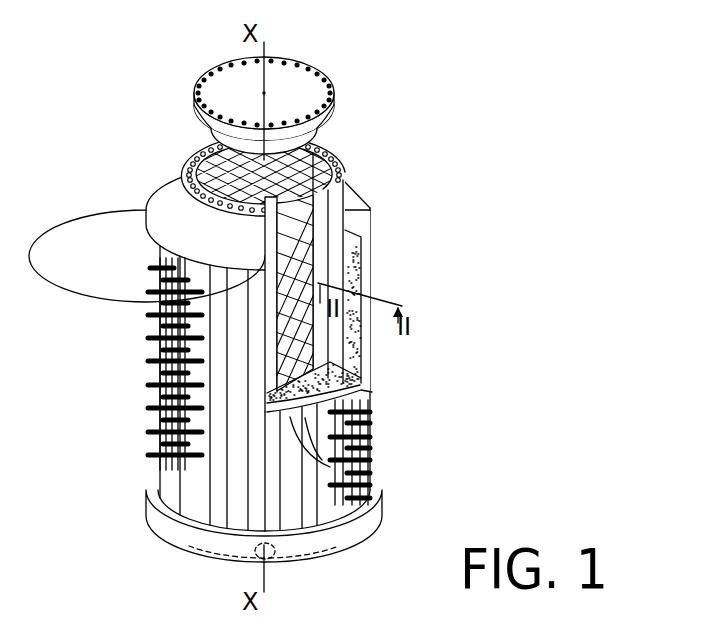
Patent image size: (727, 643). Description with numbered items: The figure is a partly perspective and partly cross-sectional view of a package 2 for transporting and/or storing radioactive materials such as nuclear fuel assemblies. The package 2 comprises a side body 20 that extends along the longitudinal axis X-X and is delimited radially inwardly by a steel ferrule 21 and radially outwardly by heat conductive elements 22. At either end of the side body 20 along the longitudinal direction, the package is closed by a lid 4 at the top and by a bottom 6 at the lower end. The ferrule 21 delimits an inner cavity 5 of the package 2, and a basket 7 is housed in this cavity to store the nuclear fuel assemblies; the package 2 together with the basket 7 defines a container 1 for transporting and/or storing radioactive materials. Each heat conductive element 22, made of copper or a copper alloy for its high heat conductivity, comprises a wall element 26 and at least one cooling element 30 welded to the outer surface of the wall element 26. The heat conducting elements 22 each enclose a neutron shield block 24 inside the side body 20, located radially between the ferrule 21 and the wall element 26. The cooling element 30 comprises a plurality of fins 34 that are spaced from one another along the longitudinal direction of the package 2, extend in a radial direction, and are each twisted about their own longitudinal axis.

The container 1 is at (348, 50).
The package 2 is at (152, 352).
The lid 4 is at (332, 86).
The inner cavity 5 is at (318, 214).
The bottom 6 is at (297, 548).
The basket 7 is at (205, 148).
The side body 20 is at (374, 257).
The steel ferrule 21 is at (343, 184).
The heat conductive element 22 is at (350, 402).
The neutron shield block 24 is at (365, 456).
The wall element 26 is at (172, 478).
The cooling element 30 is at (152, 320).
The fins 34 is at (150, 268).